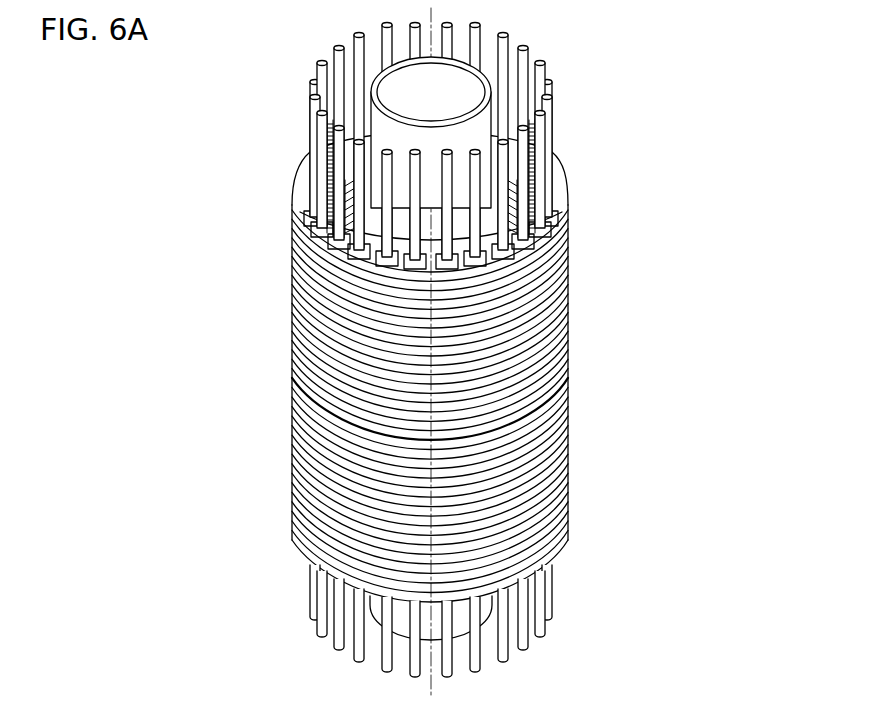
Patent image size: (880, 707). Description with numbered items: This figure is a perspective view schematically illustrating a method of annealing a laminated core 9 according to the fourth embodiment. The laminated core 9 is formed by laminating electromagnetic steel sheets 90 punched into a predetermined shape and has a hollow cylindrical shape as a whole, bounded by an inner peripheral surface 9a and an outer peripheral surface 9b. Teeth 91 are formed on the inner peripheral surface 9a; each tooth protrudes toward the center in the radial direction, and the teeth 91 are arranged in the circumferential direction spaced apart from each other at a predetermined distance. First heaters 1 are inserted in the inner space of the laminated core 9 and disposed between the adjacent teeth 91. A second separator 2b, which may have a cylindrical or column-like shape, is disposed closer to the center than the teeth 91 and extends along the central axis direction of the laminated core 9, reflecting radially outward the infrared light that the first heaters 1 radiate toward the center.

The first heater 1 is at (547, 110).
The second separator 2b is at (375, 115).
The laminated core 9 is at (282, 296).
The electromagnetic steel sheet 90 is at (560, 265).
The tooth 91 is at (352, 182).
The inner peripheral surface 9a is at (552, 188).
The outer peripheral surface 9b is at (570, 190).